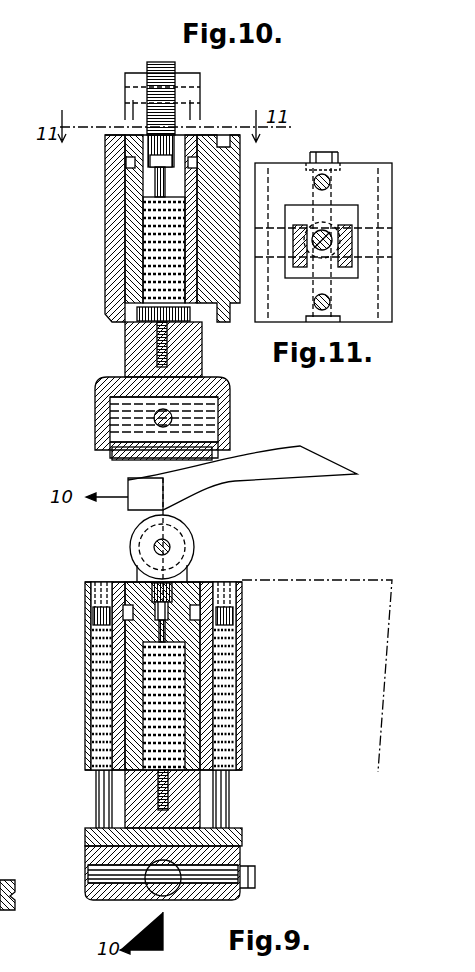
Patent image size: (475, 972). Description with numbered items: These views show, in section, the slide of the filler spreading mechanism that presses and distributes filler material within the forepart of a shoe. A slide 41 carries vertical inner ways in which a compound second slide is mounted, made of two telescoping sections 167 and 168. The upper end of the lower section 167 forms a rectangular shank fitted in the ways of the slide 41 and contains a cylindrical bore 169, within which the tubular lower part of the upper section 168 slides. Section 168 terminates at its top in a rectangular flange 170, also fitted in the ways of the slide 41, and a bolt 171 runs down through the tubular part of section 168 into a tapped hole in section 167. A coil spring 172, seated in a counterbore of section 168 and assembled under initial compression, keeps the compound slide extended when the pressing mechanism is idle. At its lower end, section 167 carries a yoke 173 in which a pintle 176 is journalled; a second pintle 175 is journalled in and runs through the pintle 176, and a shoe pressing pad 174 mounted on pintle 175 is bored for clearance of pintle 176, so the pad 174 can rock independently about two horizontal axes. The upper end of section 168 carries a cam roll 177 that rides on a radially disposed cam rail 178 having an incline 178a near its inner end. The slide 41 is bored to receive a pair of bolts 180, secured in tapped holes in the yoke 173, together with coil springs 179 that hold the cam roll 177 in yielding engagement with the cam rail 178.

In FIG. 10, the slide 41 is at (105, 163).
In FIG. 9, the slide 41 is at (292, 580).
In FIG. 10, the lower section 167 is at (128, 352).
In FIG. 10, the upper section 168 is at (150, 183).
In FIG. 10, the cylindrical bore 169 is at (137, 312).
In FIG. 9, the cylindrical bore 169 is at (200, 776).
In FIG. 10, the rectangular flange 170 is at (125, 142).
In FIG. 11, the rectangular flange 170 is at (358, 202).
In FIG. 9, the rectangular flange 170 is at (120, 585).
In FIG. 10, the bolt 171 is at (128, 192).
In FIG. 9, the bolt 171 is at (245, 630).
In FIG. 10, the coil spring 172 is at (145, 243).
In FIG. 9, the coil spring 172 is at (140, 762).
In FIG. 10, the yoke 173 is at (97, 386).
In FIG. 11, the yoke 173 is at (380, 168).
In FIG. 9, the yoke 173 is at (244, 838).
In FIG. 10, the shoe pressing pad 174 is at (112, 455).
In FIG. 9, the shoe pressing pad 174 is at (243, 858).
In FIG. 10, the second pintle 175 is at (140, 460).
In FIG. 11, the second pintle 175 is at (308, 306).
In FIG. 9, the second pintle 175 is at (105, 862).
In FIG. 10, the pintle 176 is at (110, 422).
In FIG. 11, the pintle 176 is at (262, 245).
In FIG. 9, the pintle 176 is at (168, 892).
In FIG. 10, the cam roll 177 is at (156, 64).
In FIG. 9, the cam roll 177 is at (196, 528).
In FIG. 9, the cam rail 178 is at (316, 458).
In FIG. 10, the incline 178a is at (162, 96).
In FIG. 9, the incline 178a is at (215, 499).
In FIG. 9, the coil springs 179 is at (93, 658).
In FIG. 11, the bolts 180 is at (314, 184).
In FIG. 9, the bolts 180 is at (99, 790).